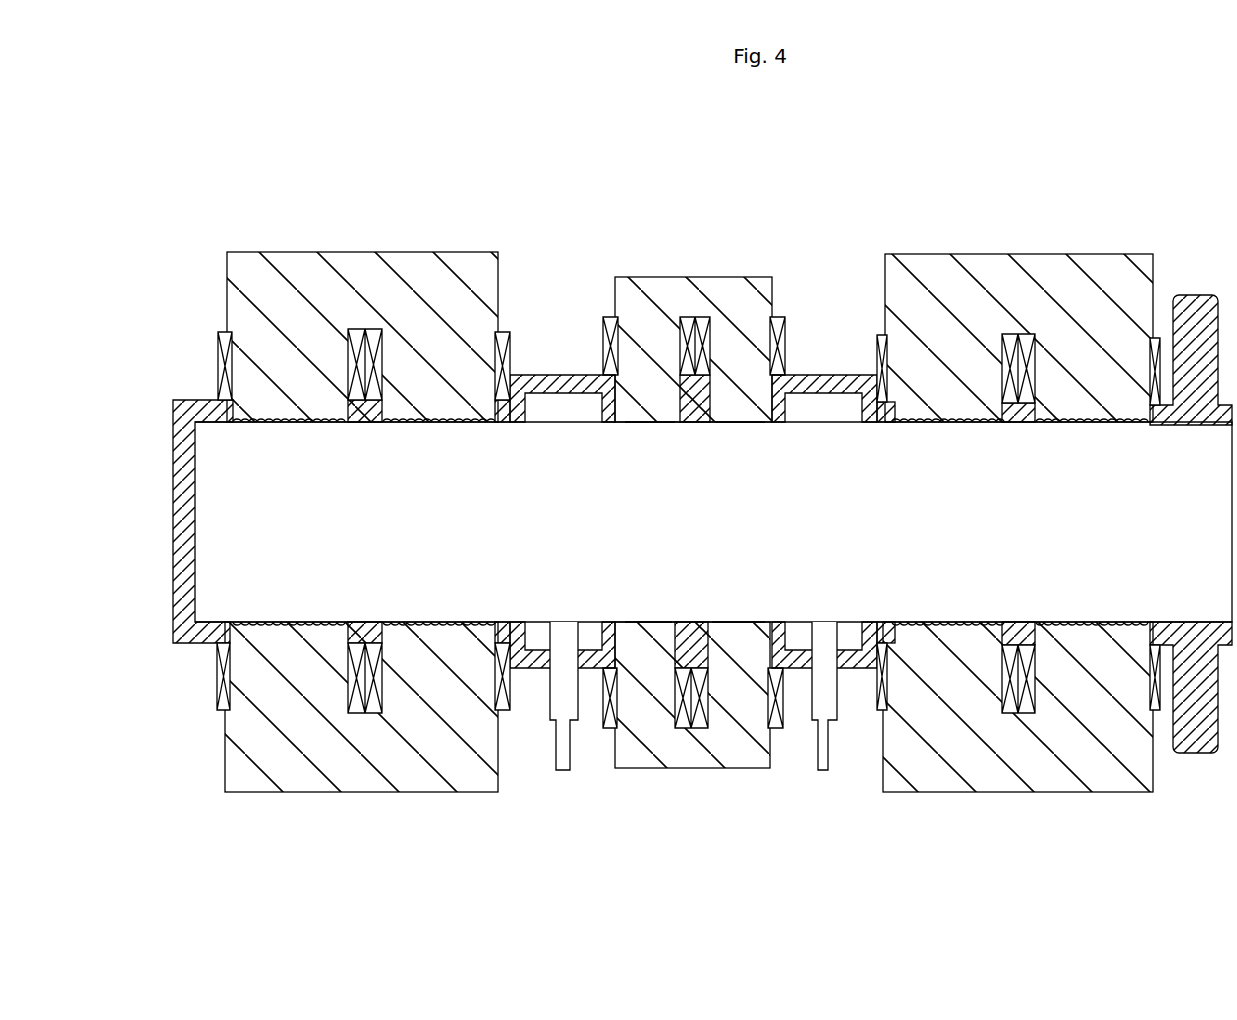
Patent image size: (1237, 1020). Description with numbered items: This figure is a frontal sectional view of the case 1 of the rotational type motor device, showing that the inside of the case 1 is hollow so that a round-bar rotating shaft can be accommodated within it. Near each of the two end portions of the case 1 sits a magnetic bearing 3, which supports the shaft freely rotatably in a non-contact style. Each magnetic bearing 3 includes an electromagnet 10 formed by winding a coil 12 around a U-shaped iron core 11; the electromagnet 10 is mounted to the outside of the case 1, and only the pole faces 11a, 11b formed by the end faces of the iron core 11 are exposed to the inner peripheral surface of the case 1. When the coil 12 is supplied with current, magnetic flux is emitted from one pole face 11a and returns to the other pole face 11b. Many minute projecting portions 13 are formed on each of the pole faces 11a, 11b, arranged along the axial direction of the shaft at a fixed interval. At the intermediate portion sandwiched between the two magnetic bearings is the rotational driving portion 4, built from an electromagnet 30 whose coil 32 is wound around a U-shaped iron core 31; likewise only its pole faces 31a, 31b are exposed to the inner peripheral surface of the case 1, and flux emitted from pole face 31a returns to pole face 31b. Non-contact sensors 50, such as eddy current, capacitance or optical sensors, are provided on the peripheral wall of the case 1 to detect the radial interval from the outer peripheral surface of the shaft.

The case 1 is at (838, 372).
The magnetic bearing 3 is at (493, 250).
The rotationally driving portion 4 is at (727, 275).
The electromagnet 10 is at (420, 250).
The iron core 11 is at (336, 252).
The pole face 11a is at (277, 424).
The pole face 11b is at (447, 424).
The coil 12 is at (220, 345).
The projecting portion 13 is at (350, 424).
The electromagnet 30 is at (650, 275).
The iron core 31 is at (693, 277).
The pole face 31a is at (648, 424).
The pole face 31b is at (740, 424).
The coil 32 is at (608, 318).
The non-contact sensor 50 is at (572, 745).